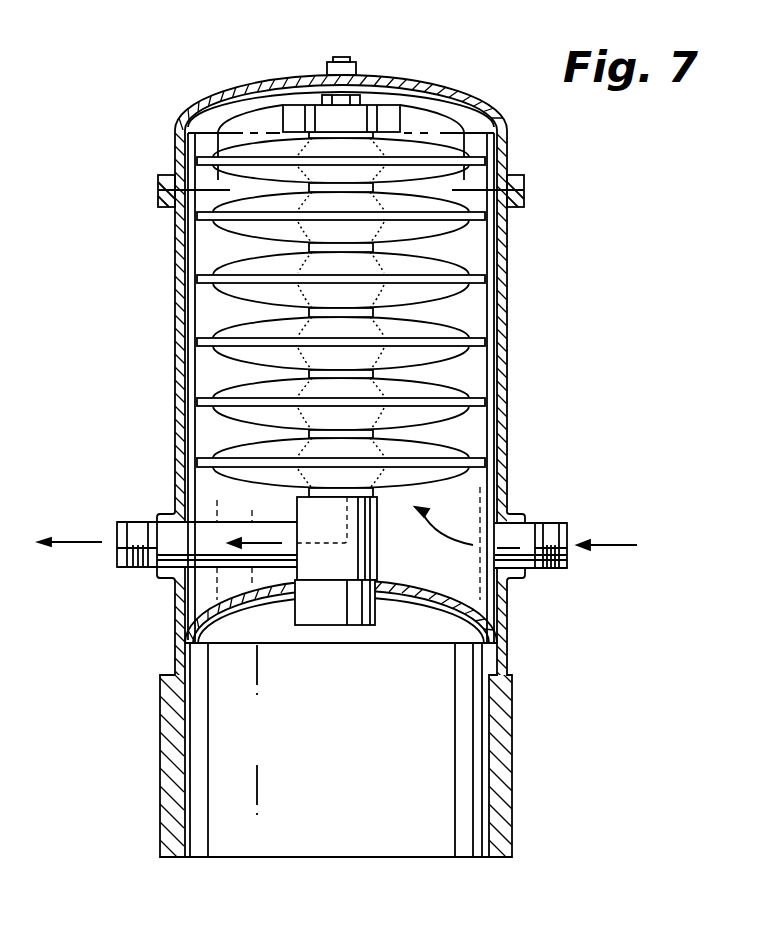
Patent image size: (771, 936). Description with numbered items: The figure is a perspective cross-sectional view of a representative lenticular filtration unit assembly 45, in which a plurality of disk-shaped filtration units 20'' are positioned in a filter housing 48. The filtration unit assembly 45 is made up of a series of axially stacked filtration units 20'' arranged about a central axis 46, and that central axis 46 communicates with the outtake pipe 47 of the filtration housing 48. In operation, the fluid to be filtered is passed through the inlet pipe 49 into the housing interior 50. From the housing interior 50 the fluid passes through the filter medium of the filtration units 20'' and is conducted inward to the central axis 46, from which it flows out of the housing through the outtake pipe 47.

The filter housing 48 is at (217, 82).
The filtration unit assembly 45 is at (218, 323).
The filtration units 20'' is at (385, 296).
The central axis 46 is at (490, 434).
The outtake pipe 47 is at (127, 521).
The inlet pipe 49 is at (558, 522).
The housing interior 50 is at (448, 555).